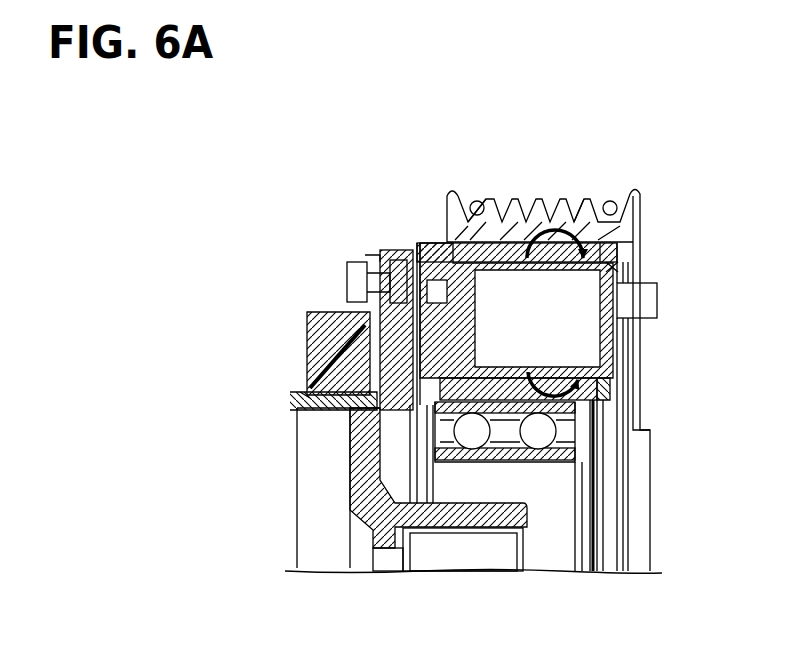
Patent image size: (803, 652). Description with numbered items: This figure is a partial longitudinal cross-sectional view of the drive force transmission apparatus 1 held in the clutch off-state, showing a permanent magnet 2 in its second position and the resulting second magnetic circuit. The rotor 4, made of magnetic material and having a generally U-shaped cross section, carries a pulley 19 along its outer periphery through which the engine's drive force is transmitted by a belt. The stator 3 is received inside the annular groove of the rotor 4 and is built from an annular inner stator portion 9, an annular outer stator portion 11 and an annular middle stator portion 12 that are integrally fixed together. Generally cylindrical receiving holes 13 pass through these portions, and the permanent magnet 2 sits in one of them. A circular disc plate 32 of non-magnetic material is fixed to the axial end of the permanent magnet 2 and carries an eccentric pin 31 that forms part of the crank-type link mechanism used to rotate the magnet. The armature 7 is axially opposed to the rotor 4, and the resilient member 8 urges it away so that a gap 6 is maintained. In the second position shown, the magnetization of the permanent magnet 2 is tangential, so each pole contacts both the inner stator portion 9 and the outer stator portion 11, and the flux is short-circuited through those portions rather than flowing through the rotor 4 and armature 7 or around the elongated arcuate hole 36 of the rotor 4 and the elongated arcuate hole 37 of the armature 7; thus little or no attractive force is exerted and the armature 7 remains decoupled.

The drive force transmission apparatus 1 is at (362, 170).
The permanent magnet 2 is at (588, 353).
The stator 3 is at (614, 247).
The rotor 4 is at (634, 184).
The gap 6 is at (412, 262).
The armature 7 is at (380, 262).
The resilient member 8 is at (320, 376).
The inner stator portion 9 is at (606, 375).
The outer stator portion 11 is at (624, 272).
The middle stator portion 12 is at (484, 262).
The receiving hole 13 is at (592, 262).
The pulley 19 is at (476, 212).
The pin 31 is at (650, 298).
The circular disc plate 32 is at (612, 336).
The elongated arcuate hole 36 is at (365, 258).
The elongated arcuate hole 37 is at (330, 318).